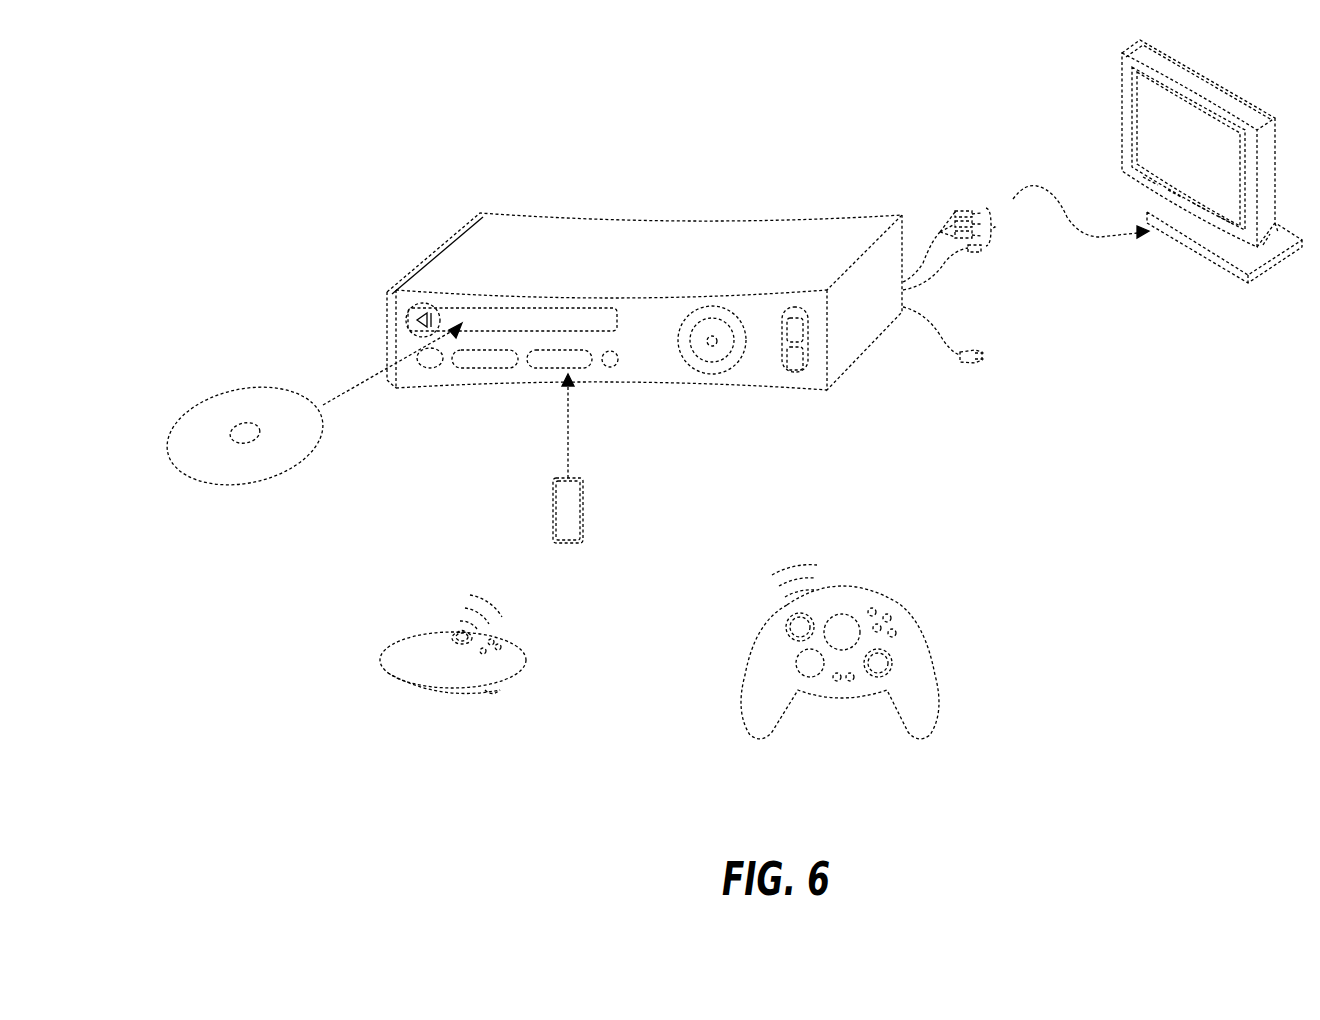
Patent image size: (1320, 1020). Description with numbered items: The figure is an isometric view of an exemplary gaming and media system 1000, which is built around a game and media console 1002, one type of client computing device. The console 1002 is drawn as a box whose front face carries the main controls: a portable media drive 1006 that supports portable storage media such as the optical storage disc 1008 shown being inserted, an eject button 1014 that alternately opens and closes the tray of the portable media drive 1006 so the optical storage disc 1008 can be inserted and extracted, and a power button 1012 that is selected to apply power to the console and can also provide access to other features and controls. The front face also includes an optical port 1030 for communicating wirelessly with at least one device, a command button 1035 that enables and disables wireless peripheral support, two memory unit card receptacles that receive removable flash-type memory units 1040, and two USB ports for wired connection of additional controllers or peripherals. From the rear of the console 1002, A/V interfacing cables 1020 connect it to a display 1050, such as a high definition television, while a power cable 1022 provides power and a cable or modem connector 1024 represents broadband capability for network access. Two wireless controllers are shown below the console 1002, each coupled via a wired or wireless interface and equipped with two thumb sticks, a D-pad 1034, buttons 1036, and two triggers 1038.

The gaming and media system 1000 is at (644, 245).
The game and media console 1002 is at (513, 226).
The portable media drive 1006 is at (537, 308).
The eject button 1014 is at (405, 317).
The optical port 1030 is at (430, 368).
The command button 1035 is at (608, 367).
The power button 1012 is at (715, 374).
The A/V interfacing cables 1020 is at (962, 205).
The cable or modem connector 1024 is at (975, 252).
The power cable 1022 is at (964, 360).
The display 1050 is at (1121, 118).
The optical storage disc 1008 is at (257, 484).
The removable flash-type memory unit 1040 is at (570, 543).
The D-pad 1034 is at (798, 664).
The buttons 1036 is at (893, 617).
The triggers 1038 is at (497, 703).